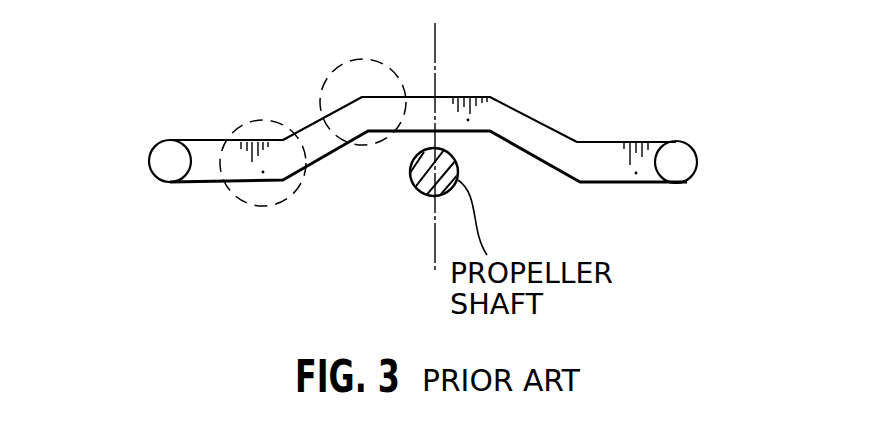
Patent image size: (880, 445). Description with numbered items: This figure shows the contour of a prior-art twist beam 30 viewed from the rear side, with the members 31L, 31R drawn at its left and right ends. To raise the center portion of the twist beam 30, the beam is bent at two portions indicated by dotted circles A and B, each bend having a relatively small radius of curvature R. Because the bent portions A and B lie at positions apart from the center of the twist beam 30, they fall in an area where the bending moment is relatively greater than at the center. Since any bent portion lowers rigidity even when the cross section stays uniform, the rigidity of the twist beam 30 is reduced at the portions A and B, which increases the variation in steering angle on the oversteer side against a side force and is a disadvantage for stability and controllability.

The twist beam 30 is at (537, 117).
The left wheel 31L is at (150, 172).
The right wheel 31R is at (685, 183).
The bent portion A is at (263, 183).
The bent portion B is at (363, 124).
The radius of curvature R is at (361, 97).